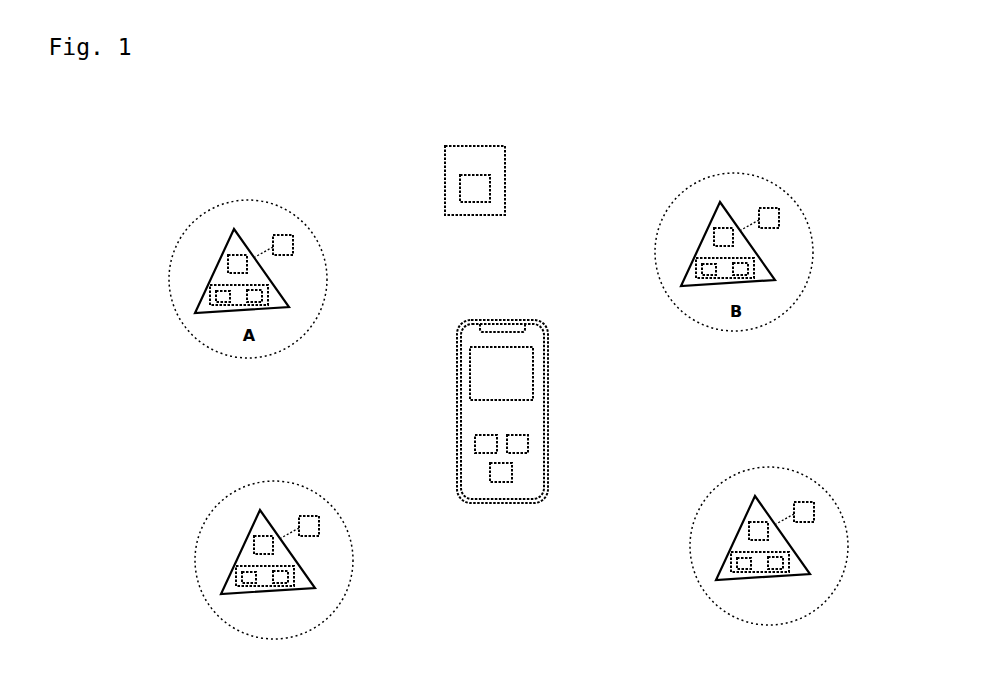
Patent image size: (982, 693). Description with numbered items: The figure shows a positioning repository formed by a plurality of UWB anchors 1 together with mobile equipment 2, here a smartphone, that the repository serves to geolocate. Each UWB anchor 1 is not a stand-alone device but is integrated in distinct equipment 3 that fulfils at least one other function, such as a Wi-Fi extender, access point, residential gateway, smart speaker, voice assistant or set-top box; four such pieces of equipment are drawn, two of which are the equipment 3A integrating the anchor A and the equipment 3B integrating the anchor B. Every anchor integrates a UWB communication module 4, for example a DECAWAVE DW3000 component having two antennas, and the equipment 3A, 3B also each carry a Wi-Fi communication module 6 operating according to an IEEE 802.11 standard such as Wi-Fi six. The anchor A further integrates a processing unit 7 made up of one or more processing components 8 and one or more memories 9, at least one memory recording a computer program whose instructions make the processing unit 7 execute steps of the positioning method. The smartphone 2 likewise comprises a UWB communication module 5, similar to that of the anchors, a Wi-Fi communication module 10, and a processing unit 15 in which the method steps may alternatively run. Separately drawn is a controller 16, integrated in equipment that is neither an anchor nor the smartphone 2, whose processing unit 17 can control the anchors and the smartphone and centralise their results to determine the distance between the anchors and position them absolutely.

The UWB anchor 1 is at (473, 386).
The mobile equipment 2 is at (549, 358).
The equipment 3 is at (521, 548).
The equipment 3A is at (248, 256).
The equipment 3B is at (734, 227).
The UWB communication module 4 is at (451, 395).
The UWB communication module 5 is at (475, 444).
The wireless communication unit 6 is at (559, 360).
The processing unit 7 is at (542, 418).
The processing component 8 is at (454, 453).
The memory 9 is at (543, 455).
The Wi-Fi communication module 10 is at (528, 443).
The processing unit 15 is at (500, 483).
The controller 16 is at (506, 168).
The processing unit 17 is at (490, 189).